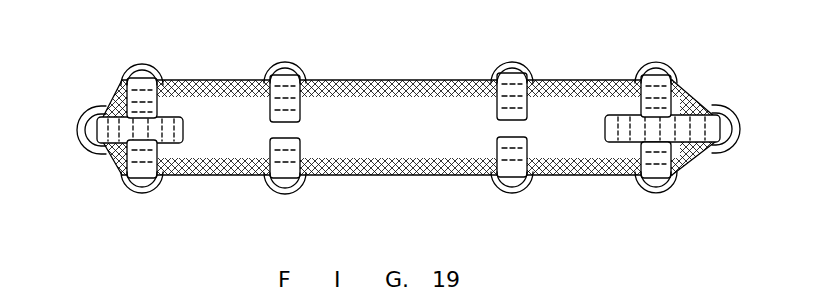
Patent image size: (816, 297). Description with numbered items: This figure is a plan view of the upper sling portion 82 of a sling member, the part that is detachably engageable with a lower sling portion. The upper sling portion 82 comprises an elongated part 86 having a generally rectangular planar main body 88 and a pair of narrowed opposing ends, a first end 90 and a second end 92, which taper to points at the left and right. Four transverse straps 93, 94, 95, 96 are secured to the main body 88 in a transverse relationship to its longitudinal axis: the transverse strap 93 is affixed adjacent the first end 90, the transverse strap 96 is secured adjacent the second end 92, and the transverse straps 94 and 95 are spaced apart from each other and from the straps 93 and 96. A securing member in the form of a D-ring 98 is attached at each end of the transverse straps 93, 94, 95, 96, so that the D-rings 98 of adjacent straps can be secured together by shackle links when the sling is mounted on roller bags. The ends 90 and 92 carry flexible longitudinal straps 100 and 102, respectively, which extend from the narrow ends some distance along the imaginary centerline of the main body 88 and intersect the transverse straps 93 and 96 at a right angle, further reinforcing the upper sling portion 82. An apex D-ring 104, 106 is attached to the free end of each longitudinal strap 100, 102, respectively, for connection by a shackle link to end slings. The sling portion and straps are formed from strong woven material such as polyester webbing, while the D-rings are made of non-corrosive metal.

The upper sling portion 82 is at (392, 79).
The elongated part 86 is at (422, 177).
The main body 88 is at (577, 174).
The first end 90 is at (110, 102).
The second end 92 is at (685, 97).
The transverse strap 93 is at (138, 102).
The transverse strap 94 is at (277, 163).
The transverse strap 95 is at (512, 167).
The transverse strap 96 is at (287, 102).
The D-ring 98 is at (140, 61).
The longitudinal strap 100 is at (115, 135).
The longitudinal strap 102 is at (690, 160).
The apex D-ring 104 is at (78, 143).
The apex D-ring 106 is at (737, 127).